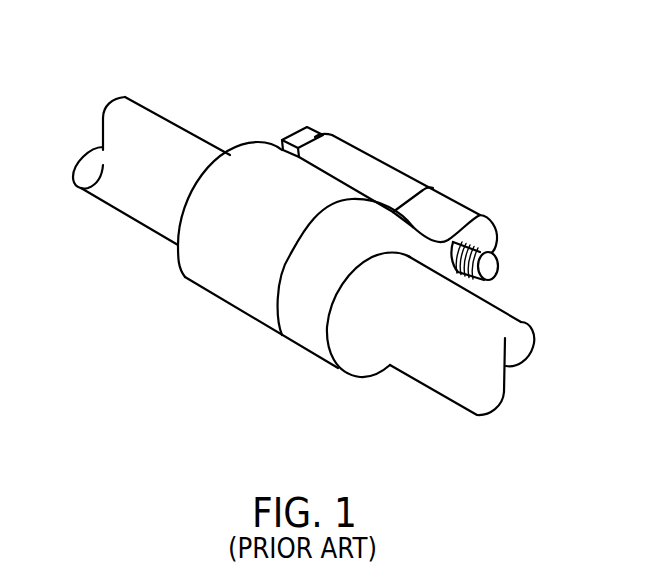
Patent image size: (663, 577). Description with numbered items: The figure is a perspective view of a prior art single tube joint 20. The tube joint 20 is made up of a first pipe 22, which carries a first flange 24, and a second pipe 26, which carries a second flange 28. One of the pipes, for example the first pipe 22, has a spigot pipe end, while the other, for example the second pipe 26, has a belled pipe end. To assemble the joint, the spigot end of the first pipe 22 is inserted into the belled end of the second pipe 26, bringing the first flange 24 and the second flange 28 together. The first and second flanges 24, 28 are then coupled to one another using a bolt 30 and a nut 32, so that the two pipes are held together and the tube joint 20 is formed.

The tube joint 20 is at (131, 428).
The first pipe 22 is at (125, 207).
The first flange 24 is at (227, 302).
The second pipe 26 is at (440, 387).
The second flange 28 is at (310, 347).
The bolt 30 is at (298, 138).
The nut 32 is at (498, 263).